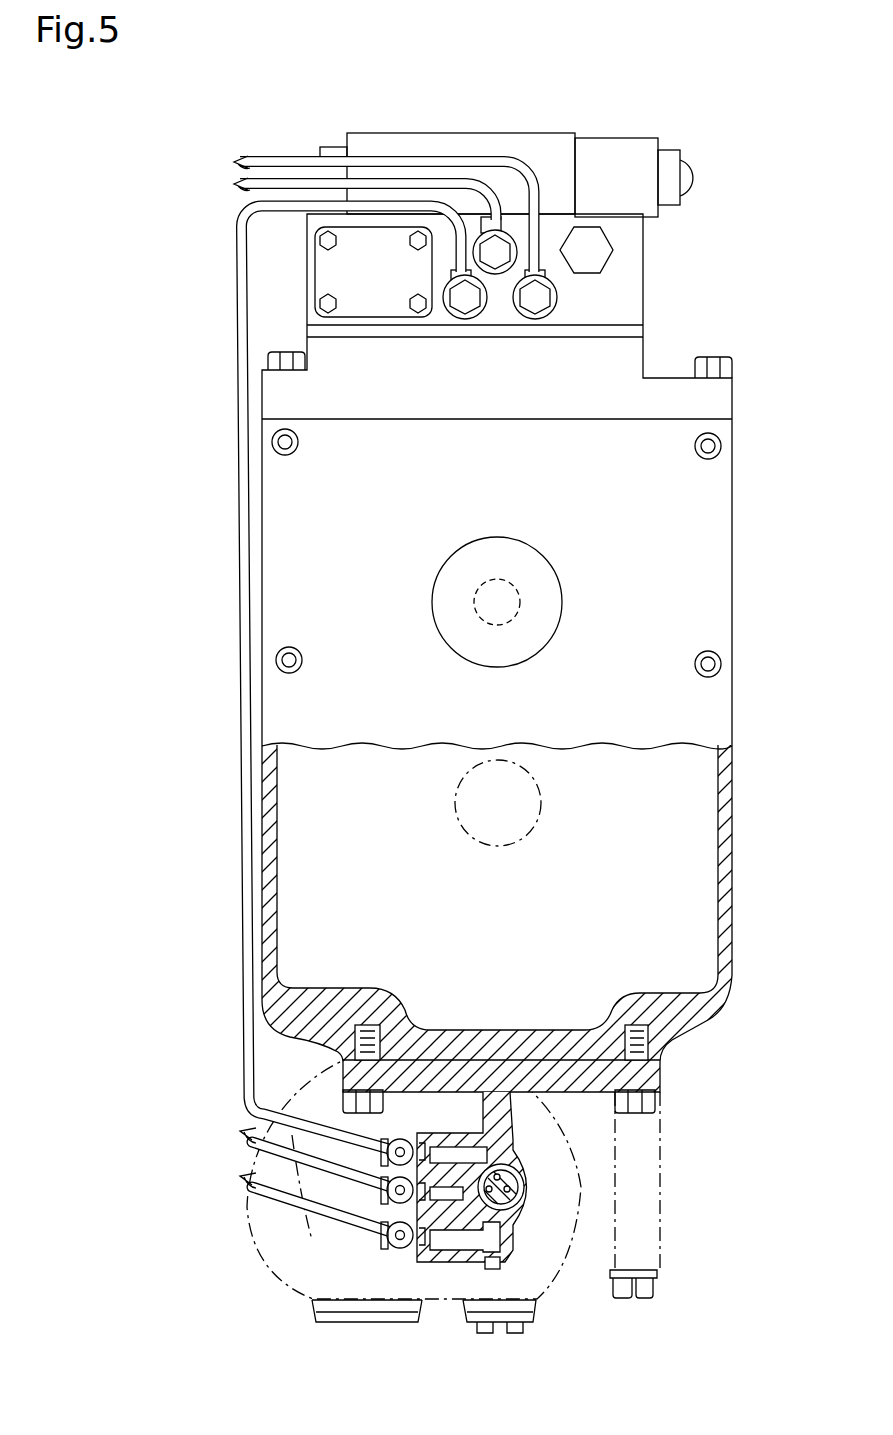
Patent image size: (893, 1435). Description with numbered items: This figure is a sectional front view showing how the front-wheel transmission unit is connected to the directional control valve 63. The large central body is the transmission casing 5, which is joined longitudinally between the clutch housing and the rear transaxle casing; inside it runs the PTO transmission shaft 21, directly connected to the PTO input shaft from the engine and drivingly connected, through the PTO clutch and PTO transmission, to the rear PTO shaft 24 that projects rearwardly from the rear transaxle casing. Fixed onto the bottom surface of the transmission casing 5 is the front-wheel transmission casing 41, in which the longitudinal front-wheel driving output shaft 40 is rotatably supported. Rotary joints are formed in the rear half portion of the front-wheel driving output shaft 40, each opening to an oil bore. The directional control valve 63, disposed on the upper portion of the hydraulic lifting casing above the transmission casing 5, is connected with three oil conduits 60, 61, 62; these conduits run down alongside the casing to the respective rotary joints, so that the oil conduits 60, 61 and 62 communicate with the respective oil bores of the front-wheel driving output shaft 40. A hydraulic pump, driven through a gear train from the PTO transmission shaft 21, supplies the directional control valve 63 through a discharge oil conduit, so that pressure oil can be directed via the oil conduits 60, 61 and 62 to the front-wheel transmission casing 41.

The transmission casing 5 is at (735, 848).
The PTO transmission shaft 21 is at (515, 585).
The rear PTO shaft 24 is at (541, 798).
The front-wheel driving output shaft 40 is at (522, 1190).
The front-wheel transmission casing 41 is at (520, 1213).
The oil conduit 60 is at (262, 188).
The oil conduit 61 is at (242, 572).
The oil conduit 62 is at (250, 157).
The directional control valve 63 is at (560, 170).